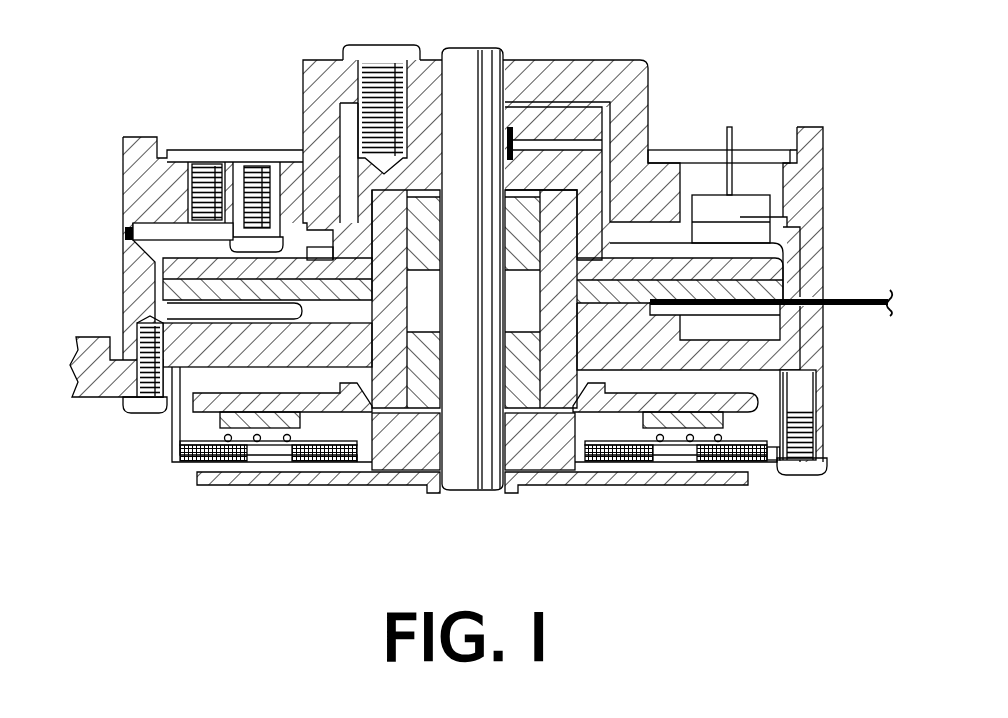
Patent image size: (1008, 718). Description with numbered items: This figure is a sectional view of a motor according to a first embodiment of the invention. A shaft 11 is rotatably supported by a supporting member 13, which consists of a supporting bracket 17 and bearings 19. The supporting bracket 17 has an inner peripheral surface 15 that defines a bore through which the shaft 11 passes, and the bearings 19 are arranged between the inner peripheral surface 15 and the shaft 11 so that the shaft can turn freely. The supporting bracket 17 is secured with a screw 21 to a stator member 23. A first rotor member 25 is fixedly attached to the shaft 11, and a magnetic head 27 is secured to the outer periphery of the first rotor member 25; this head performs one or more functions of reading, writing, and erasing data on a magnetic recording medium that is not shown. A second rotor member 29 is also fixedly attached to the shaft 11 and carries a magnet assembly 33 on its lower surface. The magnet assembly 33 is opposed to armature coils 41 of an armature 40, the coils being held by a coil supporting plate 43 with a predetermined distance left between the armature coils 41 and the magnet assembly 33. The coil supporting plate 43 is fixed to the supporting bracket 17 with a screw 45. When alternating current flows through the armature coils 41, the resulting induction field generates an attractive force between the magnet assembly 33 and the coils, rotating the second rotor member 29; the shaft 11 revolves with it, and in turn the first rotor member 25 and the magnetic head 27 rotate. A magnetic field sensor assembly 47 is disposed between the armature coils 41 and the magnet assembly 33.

The shaft 11 is at (470, 489).
The supporting member 13 is at (829, 263).
The inner peripheral surface 15 is at (405, 415).
The supporting bracket 17 is at (205, 357).
The bearings 19 is at (517, 227).
The screw 21 is at (140, 327).
The stator member 23 is at (100, 385).
The first rotor member 25 is at (548, 75).
The magnetic head 27 is at (127, 233).
The second rotor member 29 is at (750, 417).
The magnet assembly 33 is at (268, 462).
The armature 40 is at (233, 461).
The armature coils 41 is at (218, 462).
The coil supporting plate 43 is at (775, 463).
The screw 45 is at (812, 474).
The magnetic field sensor assembly 47 is at (190, 462).